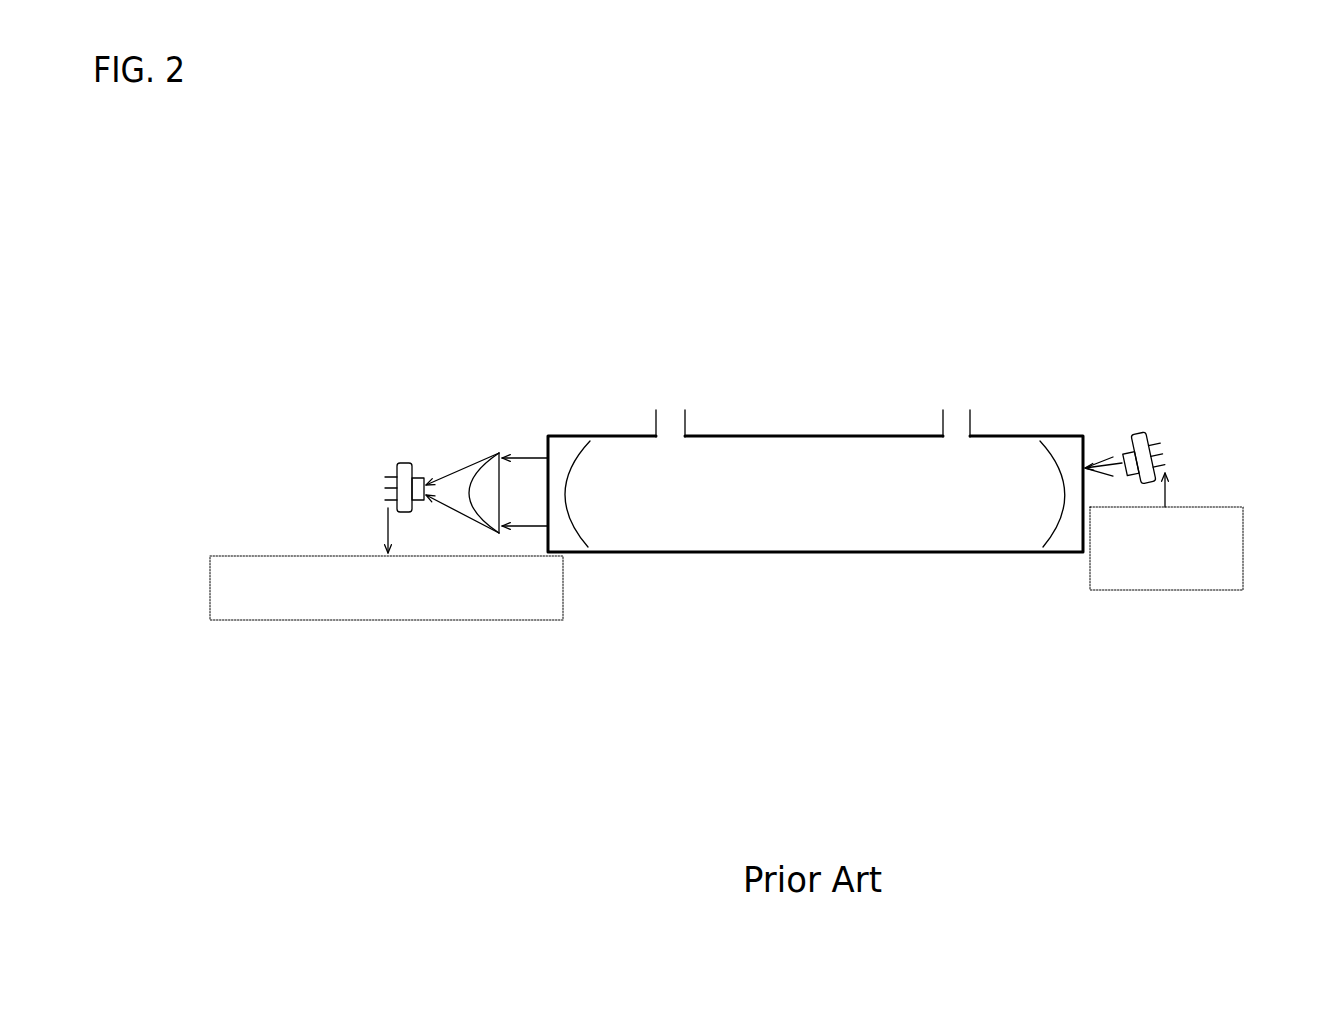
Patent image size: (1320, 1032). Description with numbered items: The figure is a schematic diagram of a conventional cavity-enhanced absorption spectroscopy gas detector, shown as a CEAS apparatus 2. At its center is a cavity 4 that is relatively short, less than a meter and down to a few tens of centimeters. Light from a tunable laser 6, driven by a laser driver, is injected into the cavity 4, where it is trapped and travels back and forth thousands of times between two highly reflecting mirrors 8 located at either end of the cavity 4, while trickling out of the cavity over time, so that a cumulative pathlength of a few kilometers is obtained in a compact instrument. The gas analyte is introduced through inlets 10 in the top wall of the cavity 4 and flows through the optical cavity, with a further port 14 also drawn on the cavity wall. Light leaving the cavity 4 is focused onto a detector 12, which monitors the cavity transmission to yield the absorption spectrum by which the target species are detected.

The CEAS apparatus 2 is at (1021, 350).
The cavity 4 is at (878, 468).
The tunable laser 6 is at (1142, 425).
The highly reflecting mirrors 8 is at (590, 546).
The inlets 10 is at (668, 418).
The detector 12 is at (408, 463).
The gas outlet port 14 is at (952, 415).